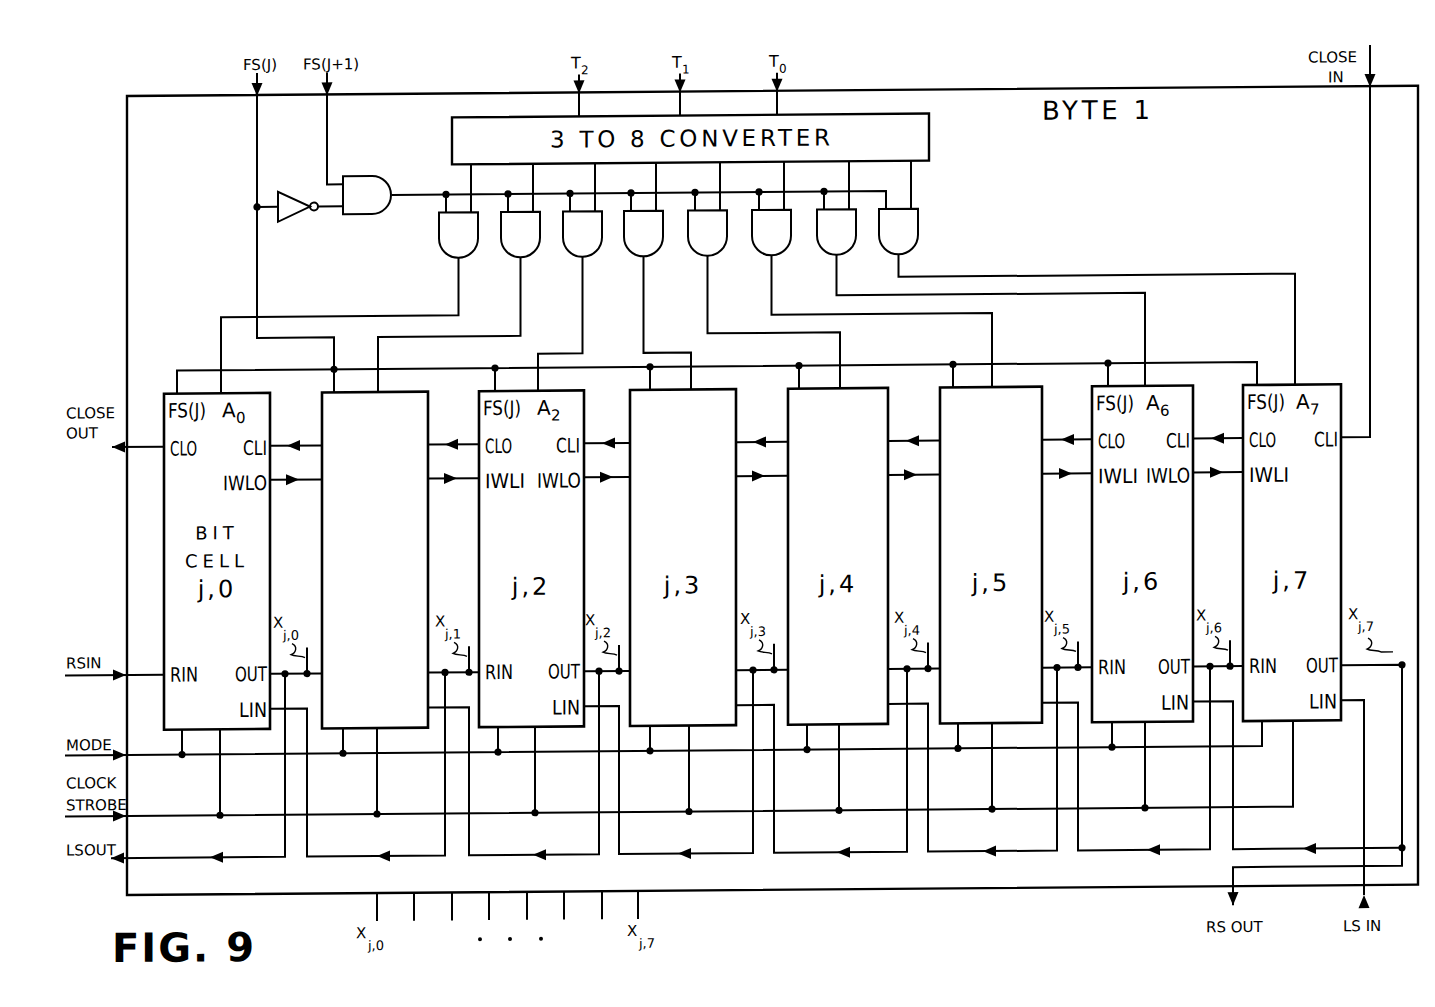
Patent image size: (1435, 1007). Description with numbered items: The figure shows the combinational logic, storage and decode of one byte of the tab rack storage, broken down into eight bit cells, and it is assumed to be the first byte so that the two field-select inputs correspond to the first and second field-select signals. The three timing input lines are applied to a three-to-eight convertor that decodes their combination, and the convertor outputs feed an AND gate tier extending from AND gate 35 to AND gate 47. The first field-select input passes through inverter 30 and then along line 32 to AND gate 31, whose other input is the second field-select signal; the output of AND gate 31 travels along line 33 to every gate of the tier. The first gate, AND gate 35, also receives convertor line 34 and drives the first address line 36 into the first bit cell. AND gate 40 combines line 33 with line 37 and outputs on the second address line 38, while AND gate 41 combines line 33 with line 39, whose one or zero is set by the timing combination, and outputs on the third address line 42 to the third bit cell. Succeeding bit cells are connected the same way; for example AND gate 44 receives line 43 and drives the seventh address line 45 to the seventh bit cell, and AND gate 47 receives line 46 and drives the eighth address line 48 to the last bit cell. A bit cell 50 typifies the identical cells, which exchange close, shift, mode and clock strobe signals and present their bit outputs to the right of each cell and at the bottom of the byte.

The inverter 30 is at (289, 184).
The AND gate 31 is at (367, 174).
The line 32 is at (312, 228).
The line 33 is at (636, 179).
The line 34 is at (449, 188).
The AND gate 35 is at (436, 249).
The A0 line 36 is at (340, 325).
The line 37 is at (551, 187).
The A1 line 38 is at (449, 324).
The line 39 is at (618, 187).
The AND gate 40 is at (507, 249).
The AND gate 41 is at (595, 248).
The A2 line 42 is at (560, 324).
The line 43 is at (871, 185).
The AND gate 44 is at (822, 241).
The A6 line 45 is at (991, 320).
The line 46 is at (933, 184).
The AND gate 47 is at (921, 233).
The A7 line 48 is at (1097, 310).
The bit cell 50 is at (399, 559).